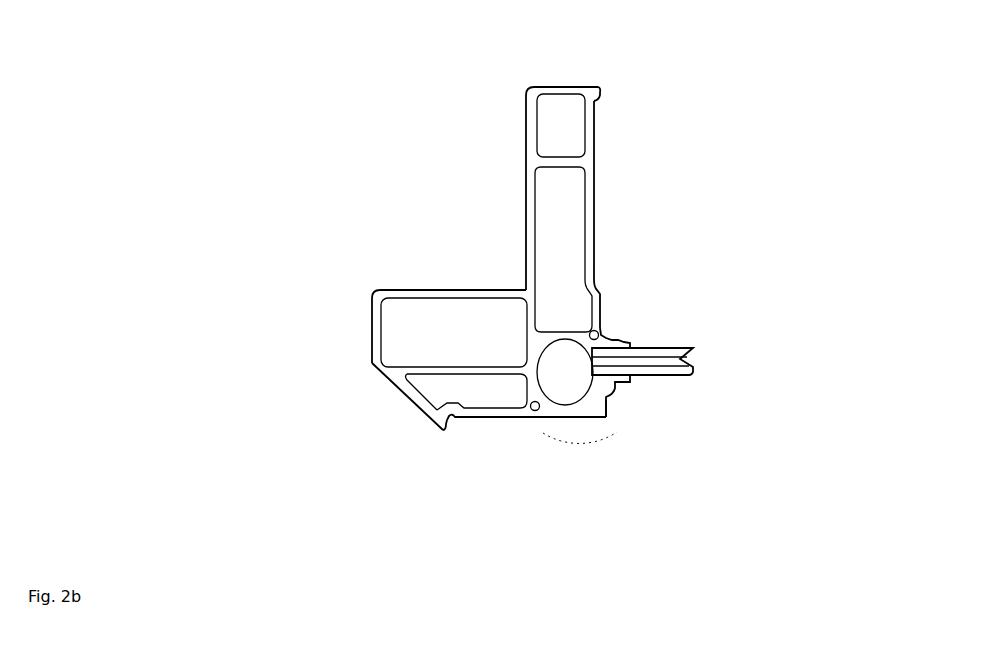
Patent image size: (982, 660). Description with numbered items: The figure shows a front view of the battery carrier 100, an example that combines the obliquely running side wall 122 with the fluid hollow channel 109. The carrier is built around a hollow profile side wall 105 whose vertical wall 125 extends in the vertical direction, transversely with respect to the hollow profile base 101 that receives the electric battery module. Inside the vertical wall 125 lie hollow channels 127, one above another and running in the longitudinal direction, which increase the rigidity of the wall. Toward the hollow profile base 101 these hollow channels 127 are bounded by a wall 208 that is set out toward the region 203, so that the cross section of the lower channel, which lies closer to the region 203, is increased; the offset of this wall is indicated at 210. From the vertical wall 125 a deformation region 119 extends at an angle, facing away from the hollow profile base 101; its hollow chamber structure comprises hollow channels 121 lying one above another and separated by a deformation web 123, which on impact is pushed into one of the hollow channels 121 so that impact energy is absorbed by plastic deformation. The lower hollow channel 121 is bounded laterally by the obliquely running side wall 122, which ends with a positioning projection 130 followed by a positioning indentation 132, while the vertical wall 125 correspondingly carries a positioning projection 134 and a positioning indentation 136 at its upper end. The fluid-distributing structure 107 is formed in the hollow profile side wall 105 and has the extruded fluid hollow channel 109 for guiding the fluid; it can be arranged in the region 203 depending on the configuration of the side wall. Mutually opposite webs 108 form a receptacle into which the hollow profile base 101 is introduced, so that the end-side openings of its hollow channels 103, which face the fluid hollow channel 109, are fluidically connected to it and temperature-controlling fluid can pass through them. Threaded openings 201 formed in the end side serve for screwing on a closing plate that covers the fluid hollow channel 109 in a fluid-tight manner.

The battery carrier 100 is at (337, 157).
The hollow profile base 101 is at (658, 347).
The hollow channels 103 is at (697, 357).
The hollow profile side wall 105 is at (492, 268).
The fluid-distributing structure 107 is at (633, 413).
The webs 108 is at (623, 338).
The fluid hollow channel 109 is at (560, 362).
The deformation region 119 is at (413, 275).
The hollow channels 121 is at (448, 345).
The obliquely running side wall 122 is at (405, 398).
The deformation web 123 is at (397, 380).
The vertical wall 125 is at (527, 95).
The hollow channels 127 is at (572, 147).
The positioning projection 130 is at (442, 428).
The positioning indentation 132 is at (450, 428).
The positioning projection 134 is at (597, 89).
The positioning indentation 136 is at (603, 95).
The threaded openings 201 is at (598, 333).
The region 203 is at (642, 400).
The wall 208 is at (595, 270).
The wall offset 210 is at (603, 297).